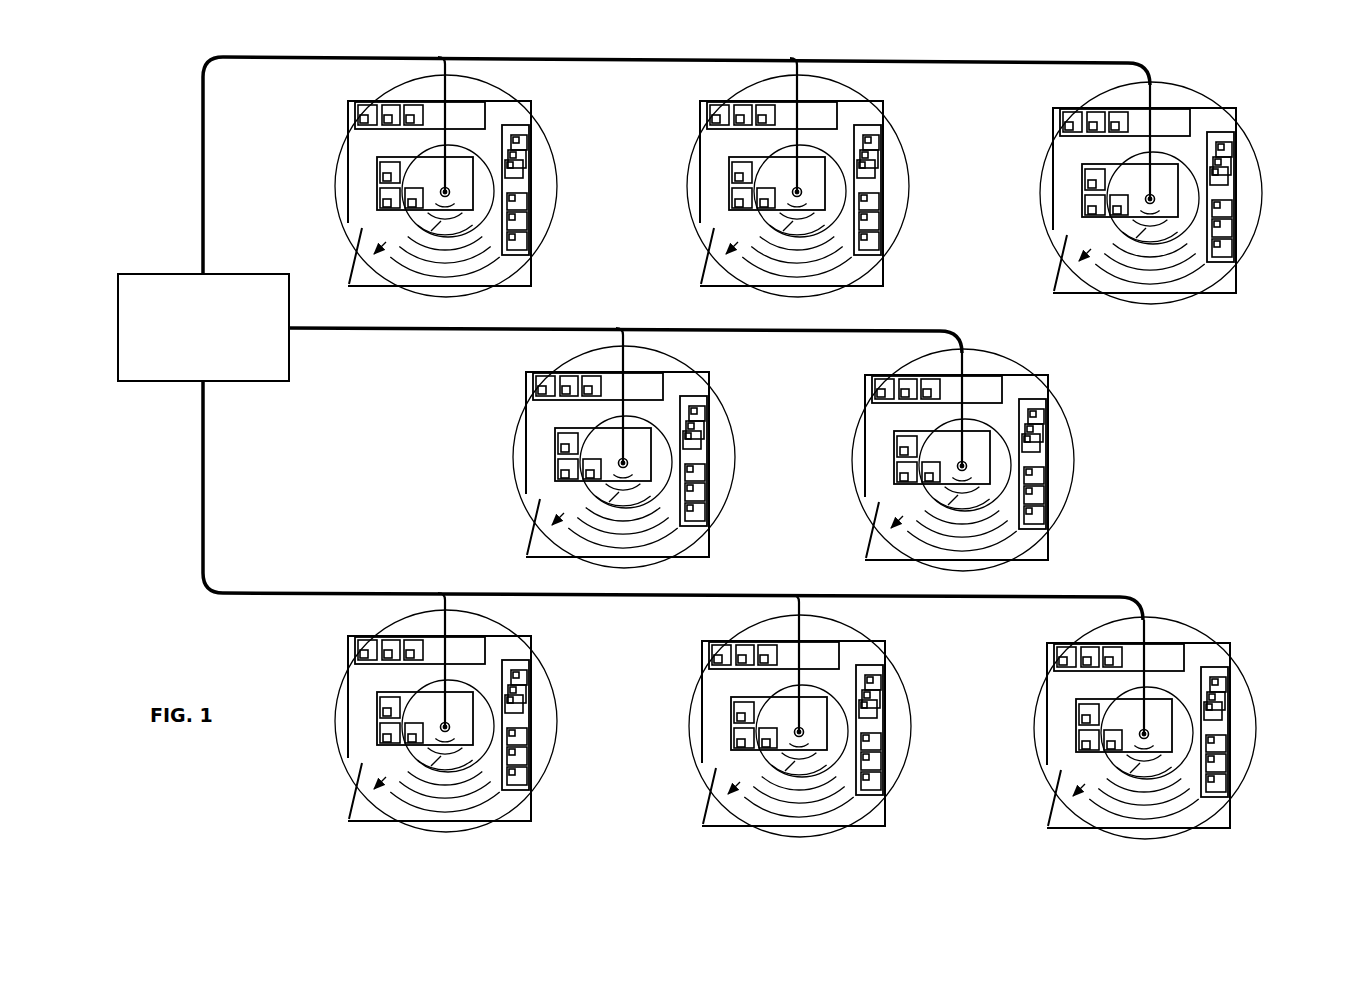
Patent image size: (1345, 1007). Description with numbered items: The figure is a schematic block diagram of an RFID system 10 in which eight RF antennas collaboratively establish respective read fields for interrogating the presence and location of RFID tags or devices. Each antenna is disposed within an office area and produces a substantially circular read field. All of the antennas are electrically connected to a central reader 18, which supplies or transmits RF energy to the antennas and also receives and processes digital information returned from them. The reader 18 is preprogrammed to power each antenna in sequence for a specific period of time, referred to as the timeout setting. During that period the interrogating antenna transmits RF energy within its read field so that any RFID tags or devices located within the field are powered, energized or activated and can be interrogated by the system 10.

The RFID system 10 is at (1210, 76).
The central reader 18 is at (290, 358).